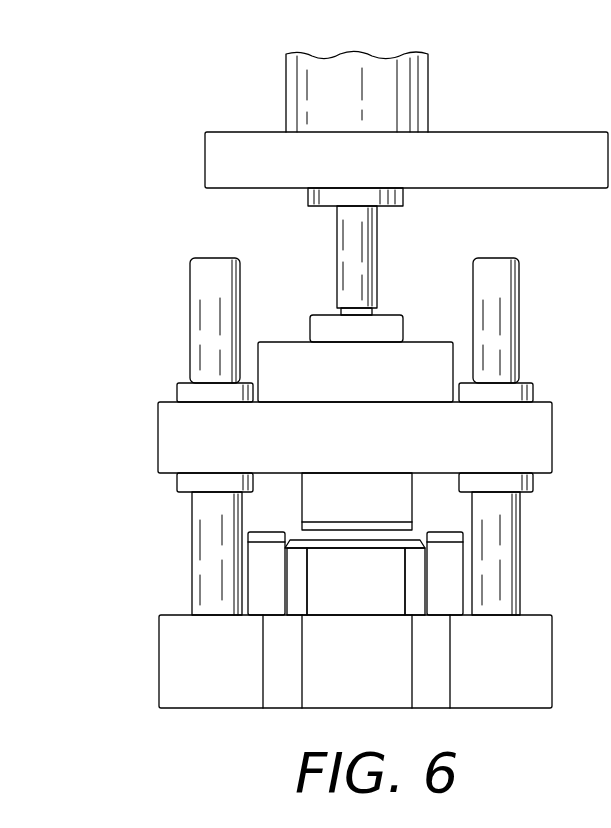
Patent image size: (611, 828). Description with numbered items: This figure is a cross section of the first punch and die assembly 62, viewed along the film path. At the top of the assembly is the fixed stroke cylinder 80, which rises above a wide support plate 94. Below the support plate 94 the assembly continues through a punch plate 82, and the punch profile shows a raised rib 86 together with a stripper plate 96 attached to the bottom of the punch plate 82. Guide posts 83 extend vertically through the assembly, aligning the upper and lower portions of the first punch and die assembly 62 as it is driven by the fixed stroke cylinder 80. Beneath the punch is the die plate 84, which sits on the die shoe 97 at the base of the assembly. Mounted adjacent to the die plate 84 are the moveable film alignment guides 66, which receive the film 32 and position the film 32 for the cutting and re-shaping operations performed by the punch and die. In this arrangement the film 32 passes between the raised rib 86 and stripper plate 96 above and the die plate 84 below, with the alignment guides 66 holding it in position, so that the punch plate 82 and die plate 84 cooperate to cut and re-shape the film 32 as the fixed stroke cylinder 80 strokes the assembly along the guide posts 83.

The fixed stroke cylinder 80 is at (417, 98).
The support plate 94 is at (212, 157).
The first punch and die assembly 62 is at (335, 447).
The punch plate 82 is at (537, 443).
The raised rib 86 is at (392, 490).
The stripper plate 96 is at (405, 523).
The film 32 is at (298, 537).
The moveable film alignment guides 66 is at (262, 558).
The guide posts 83 is at (205, 580).
The die plate 84 is at (417, 600).
The die shoe 97 is at (172, 646).